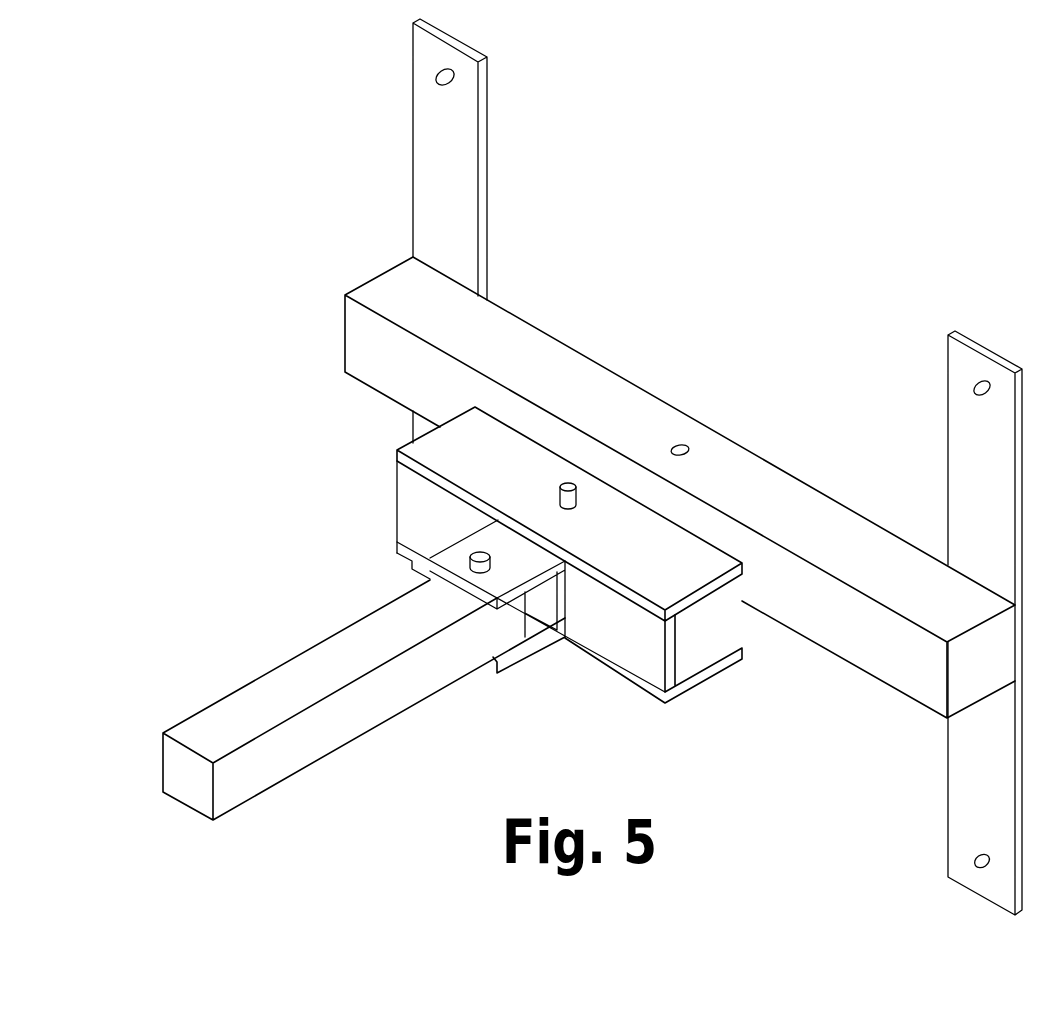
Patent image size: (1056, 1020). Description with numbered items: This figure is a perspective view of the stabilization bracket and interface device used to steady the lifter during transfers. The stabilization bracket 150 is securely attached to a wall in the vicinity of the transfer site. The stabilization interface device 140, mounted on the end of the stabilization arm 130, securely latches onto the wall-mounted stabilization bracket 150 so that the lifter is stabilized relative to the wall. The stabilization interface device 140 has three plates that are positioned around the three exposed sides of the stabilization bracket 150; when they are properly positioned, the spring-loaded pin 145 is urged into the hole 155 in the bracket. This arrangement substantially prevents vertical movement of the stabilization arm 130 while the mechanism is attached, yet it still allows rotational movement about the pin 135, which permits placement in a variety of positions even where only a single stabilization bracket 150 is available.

The stabilization arm 130 is at (267, 672).
The pin 135 is at (470, 560).
The stabilization interface device 140 is at (722, 672).
The spring-loaded pin 145 is at (560, 497).
The stabilization bracket 150 is at (580, 350).
The hole 155 is at (681, 446).